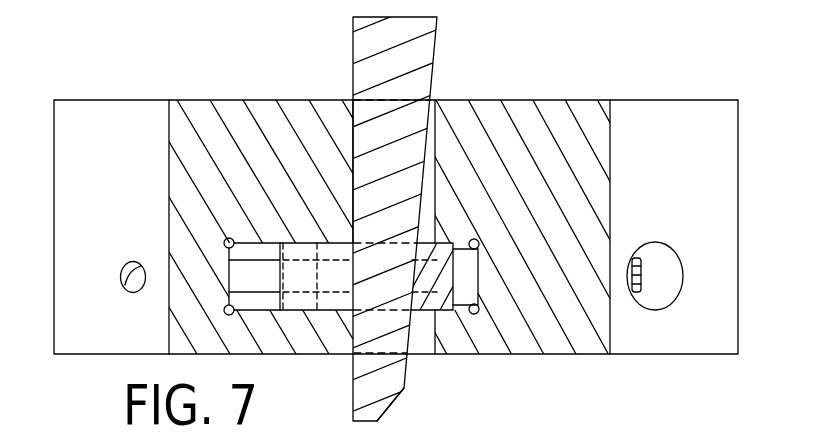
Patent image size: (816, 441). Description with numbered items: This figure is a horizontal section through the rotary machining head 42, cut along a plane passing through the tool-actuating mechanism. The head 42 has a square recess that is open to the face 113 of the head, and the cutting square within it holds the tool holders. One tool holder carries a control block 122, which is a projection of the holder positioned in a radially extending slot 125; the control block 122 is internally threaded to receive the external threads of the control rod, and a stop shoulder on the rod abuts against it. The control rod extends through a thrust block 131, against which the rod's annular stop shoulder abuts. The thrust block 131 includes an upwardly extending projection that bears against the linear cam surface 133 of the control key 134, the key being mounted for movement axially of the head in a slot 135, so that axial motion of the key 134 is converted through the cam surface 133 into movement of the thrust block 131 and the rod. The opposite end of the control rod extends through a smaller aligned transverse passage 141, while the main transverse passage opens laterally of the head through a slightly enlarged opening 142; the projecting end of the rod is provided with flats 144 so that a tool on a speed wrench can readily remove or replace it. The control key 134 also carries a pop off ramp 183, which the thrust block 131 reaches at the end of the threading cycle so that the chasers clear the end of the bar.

The rotary machining head 42 is at (580, 90).
The face of the head 113 is at (687, 354).
The control block 122 is at (340, 310).
The radially extending slot 125 is at (268, 312).
The thrust block 131 is at (422, 310).
The linear cam surface 133 is at (425, 147).
The control key 134 is at (440, 54).
The slot 135 is at (352, 133).
The smaller aligned transverse passage 141 is at (121, 286).
The slightly enlarged opening 142 is at (683, 275).
The flats 144 is at (641, 276).
The pop off ramp 183 is at (392, 404).